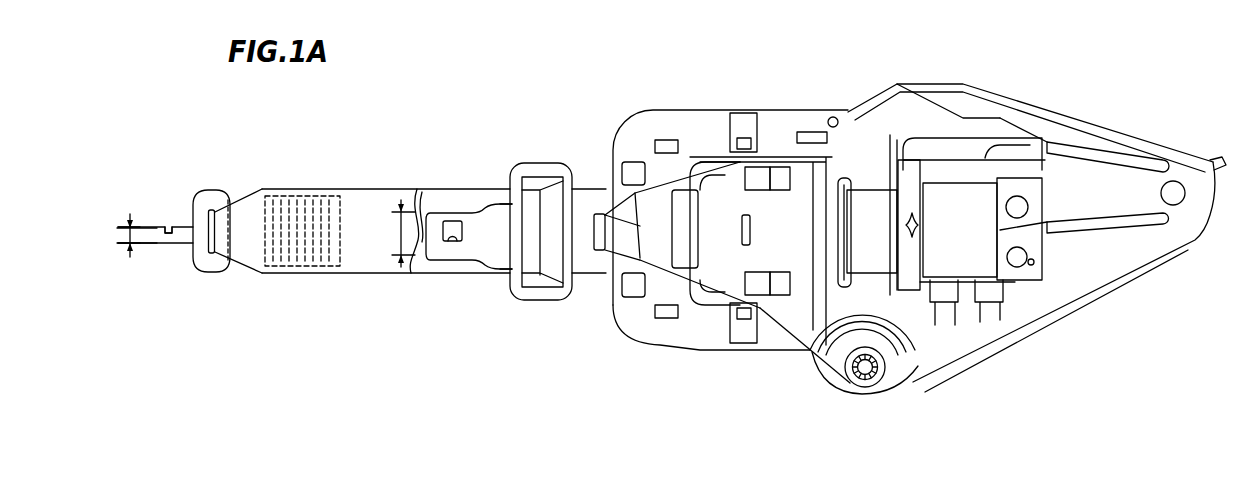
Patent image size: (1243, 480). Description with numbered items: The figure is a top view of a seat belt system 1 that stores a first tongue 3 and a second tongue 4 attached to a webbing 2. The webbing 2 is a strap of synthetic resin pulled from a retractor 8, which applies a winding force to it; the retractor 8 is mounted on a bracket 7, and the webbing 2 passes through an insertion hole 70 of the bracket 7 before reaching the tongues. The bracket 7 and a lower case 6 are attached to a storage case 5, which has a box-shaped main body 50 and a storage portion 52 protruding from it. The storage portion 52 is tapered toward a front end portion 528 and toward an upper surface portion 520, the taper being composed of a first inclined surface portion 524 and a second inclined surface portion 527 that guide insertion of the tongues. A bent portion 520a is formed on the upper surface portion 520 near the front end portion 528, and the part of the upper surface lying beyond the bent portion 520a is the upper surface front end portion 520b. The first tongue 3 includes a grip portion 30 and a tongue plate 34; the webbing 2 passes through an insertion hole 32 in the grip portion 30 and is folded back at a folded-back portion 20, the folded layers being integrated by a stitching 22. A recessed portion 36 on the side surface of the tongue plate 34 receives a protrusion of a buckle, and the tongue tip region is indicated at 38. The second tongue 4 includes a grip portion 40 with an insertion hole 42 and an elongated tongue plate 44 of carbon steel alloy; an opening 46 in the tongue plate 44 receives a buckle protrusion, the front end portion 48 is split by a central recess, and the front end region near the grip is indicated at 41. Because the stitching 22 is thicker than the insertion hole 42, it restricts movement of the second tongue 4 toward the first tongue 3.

The seat belt system 1 is at (1033, 64).
The webbing 2 is at (372, 200).
The first tongue 3 is at (213, 189).
The second tongue 4 is at (479, 169).
The storage case 5 is at (845, 62).
The lower case 6 is at (767, 340).
The bracket 7 is at (902, 105).
The retractor 8 is at (968, 305).
The folded-back portion 20 is at (218, 256).
The stitching 22 is at (345, 279).
The grip portion 30 is at (207, 257).
The insertion hole 32 is at (213, 212).
The tongue plate 34 is at (187, 237).
The recessed portion 36 is at (170, 222).
The tongue tip portion 38 is at (158, 233).
The grip portion 40 is at (552, 298).
The front end portion 41 is at (495, 322).
The insertion hole 42 is at (537, 287).
The tongue plate 44 is at (473, 232).
The opening 46 is at (448, 243).
The front end portion 48 is at (418, 248).
The main body 50 is at (782, 142).
The storage portion 52 is at (668, 173).
The insertion hole 70 is at (853, 287).
The upper surface portion 520 is at (661, 224).
The bent portion 520a is at (642, 262).
The upper surface front end portion 520b is at (620, 230).
The first inclined surface portion 524 is at (638, 202).
The second inclined surface portion 527 is at (622, 245).
The front end portion 528 is at (602, 233).